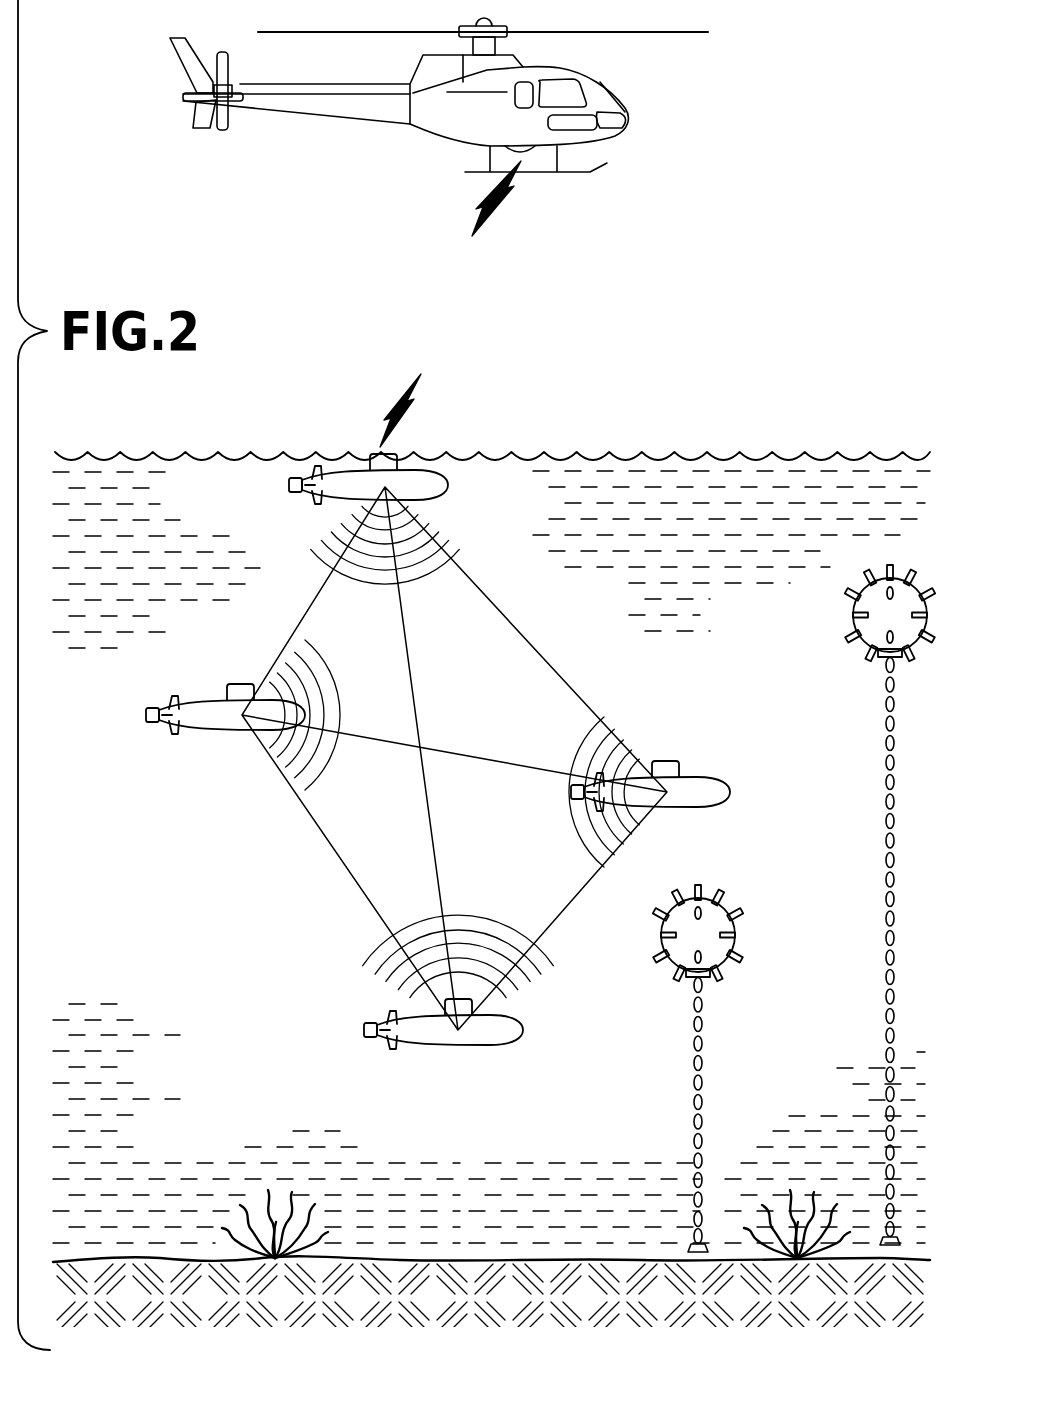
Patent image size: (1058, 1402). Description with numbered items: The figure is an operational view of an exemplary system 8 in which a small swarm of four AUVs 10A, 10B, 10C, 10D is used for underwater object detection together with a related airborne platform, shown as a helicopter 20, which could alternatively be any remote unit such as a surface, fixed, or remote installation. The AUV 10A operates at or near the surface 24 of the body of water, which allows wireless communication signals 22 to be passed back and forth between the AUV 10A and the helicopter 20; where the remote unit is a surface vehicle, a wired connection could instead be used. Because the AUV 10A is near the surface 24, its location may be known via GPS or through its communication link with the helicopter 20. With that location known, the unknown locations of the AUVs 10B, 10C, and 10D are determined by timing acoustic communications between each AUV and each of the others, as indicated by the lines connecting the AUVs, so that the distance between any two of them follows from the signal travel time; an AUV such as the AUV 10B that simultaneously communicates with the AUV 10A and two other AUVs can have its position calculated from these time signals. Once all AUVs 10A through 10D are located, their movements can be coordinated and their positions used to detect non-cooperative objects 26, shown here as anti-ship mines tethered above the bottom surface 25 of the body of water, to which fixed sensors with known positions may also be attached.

The system 8 is at (770, 152).
The AUV 10A is at (432, 488).
The AUV 10B is at (204, 708).
The AUV 10C is at (697, 786).
The AUV 10D is at (490, 1035).
The helicopter 20 is at (598, 98).
The communication signals 22 is at (488, 206).
The surface 24 is at (690, 457).
The bottom surface 25 is at (494, 1303).
The non-cooperative objects 26 is at (853, 614).